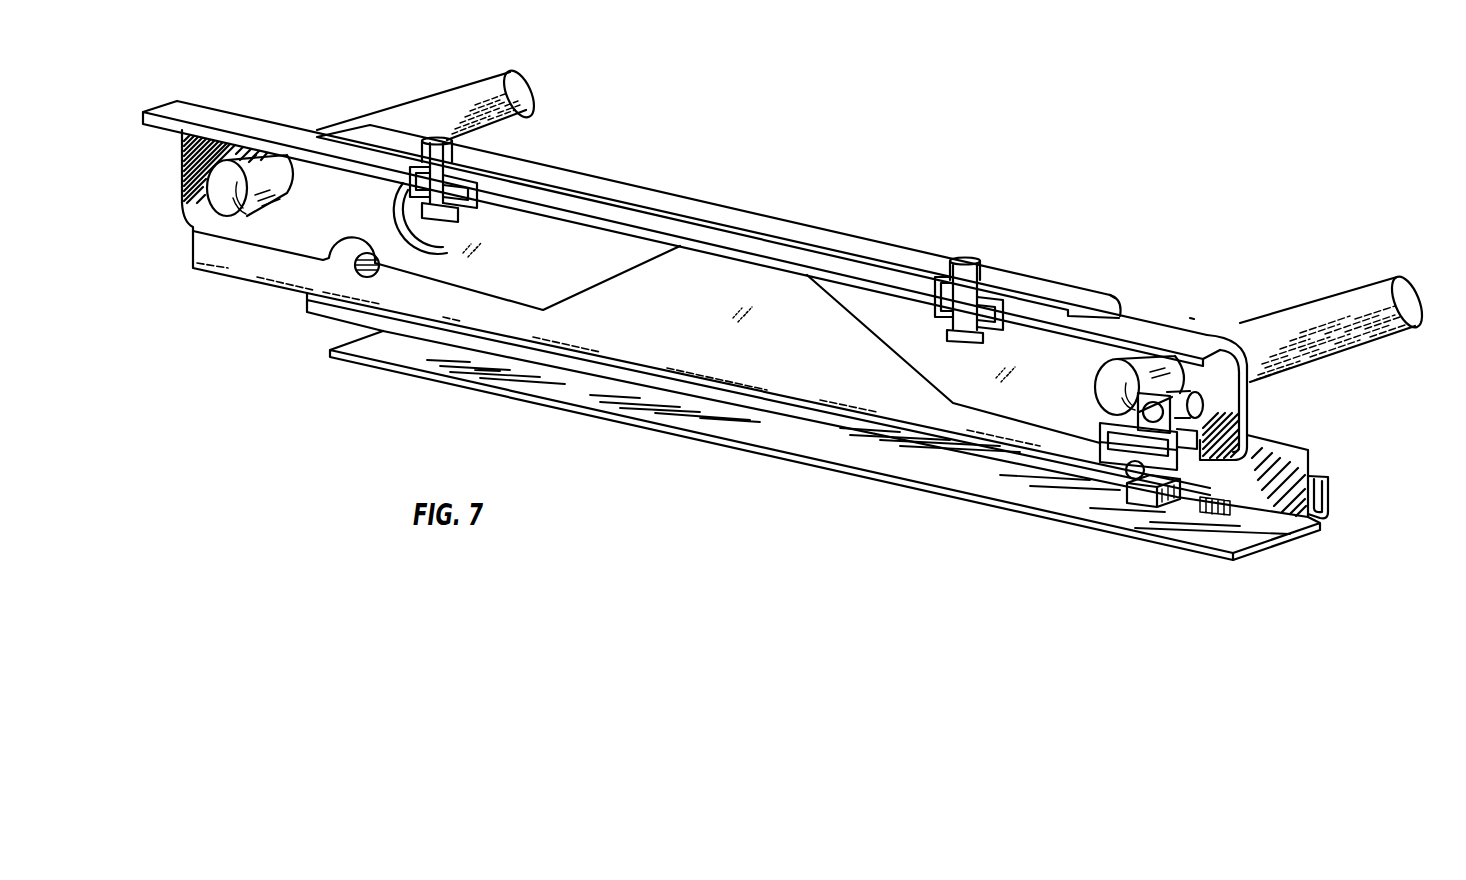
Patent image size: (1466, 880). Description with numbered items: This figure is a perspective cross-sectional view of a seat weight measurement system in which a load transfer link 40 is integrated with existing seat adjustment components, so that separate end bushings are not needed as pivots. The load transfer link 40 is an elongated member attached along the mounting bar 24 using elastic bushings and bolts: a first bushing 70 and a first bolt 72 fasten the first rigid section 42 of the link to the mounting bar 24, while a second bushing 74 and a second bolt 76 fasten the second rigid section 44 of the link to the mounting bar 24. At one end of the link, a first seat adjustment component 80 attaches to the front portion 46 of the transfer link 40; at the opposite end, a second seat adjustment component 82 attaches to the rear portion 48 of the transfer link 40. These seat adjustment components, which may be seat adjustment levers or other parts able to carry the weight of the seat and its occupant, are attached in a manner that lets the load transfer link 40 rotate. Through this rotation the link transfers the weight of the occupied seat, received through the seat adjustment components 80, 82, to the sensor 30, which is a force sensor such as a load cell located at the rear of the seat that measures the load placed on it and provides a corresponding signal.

The mounting bar 24 is at (704, 213).
The sensor 30 is at (1100, 448).
The load transfer link 40 is at (1186, 304).
The first rigid section 42 is at (234, 102).
The second rigid section 44 is at (1126, 306).
The front portion 46 is at (181, 174).
The rear portion 48 is at (1235, 390).
The first bushing 70 is at (487, 212).
The first bolt 72 is at (508, 111).
The second bushing 74 is at (998, 284).
The second bolt 76 is at (966, 258).
The first seat adjustment component 80 is at (512, 78).
The second seat adjustment component 82 is at (1398, 282).